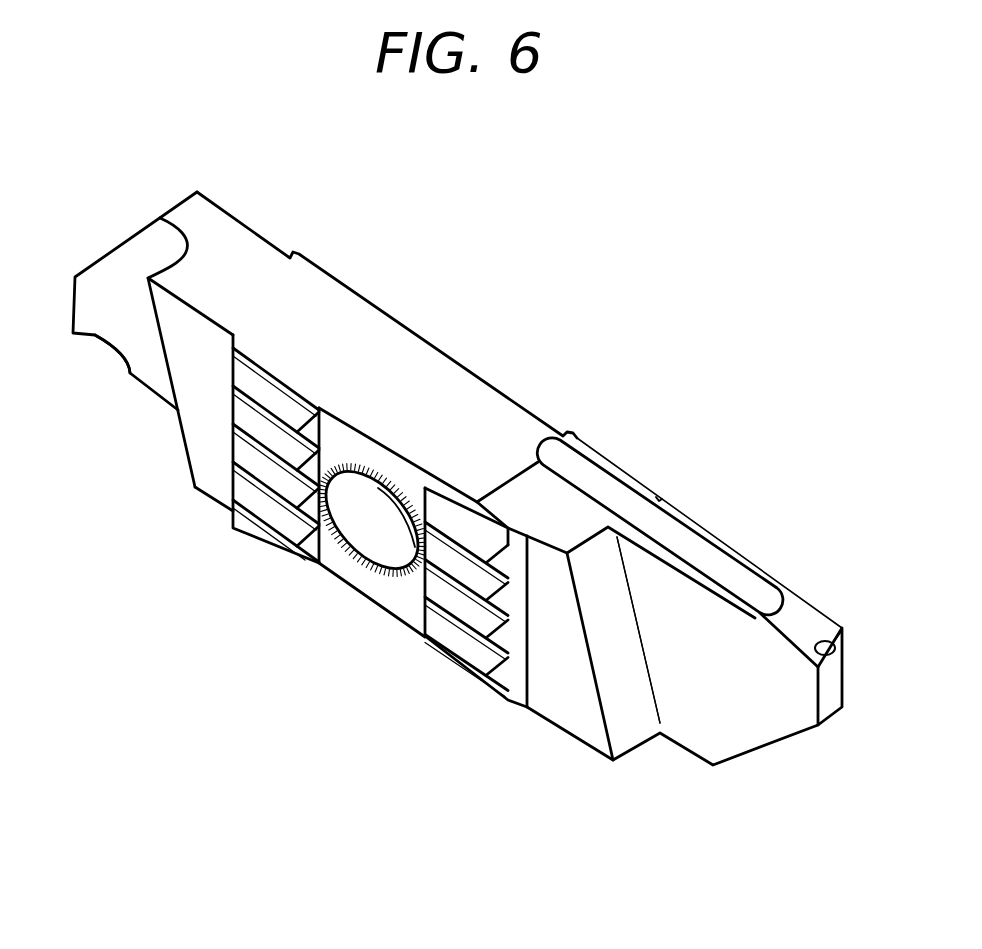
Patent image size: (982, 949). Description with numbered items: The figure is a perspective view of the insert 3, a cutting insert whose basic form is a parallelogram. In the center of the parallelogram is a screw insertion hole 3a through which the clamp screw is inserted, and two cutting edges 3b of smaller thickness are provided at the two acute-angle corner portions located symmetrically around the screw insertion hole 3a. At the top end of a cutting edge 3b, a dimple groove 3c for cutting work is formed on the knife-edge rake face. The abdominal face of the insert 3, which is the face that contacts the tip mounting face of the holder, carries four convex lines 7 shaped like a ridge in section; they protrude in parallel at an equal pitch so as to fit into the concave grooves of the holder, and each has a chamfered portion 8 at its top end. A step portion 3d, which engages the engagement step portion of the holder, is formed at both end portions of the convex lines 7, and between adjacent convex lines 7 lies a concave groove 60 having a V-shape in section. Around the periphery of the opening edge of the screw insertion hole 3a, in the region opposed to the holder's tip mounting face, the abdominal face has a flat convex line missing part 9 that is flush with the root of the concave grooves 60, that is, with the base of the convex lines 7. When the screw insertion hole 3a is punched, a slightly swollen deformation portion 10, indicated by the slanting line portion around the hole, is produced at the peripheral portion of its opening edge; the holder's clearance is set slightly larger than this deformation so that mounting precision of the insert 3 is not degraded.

The insert 3 is at (400, 307).
The screw insertion hole 3a is at (383, 562).
The cutting edge 3b is at (147, 370).
The dimple groove 3c is at (824, 645).
The step portion 3d is at (234, 341).
The convex line 7 is at (308, 548).
The chamfered portion 8 is at (253, 525).
The convex line missing part 9 is at (343, 580).
The swollen deformation portion 10 is at (360, 439).
The concave groove 60 is at (253, 492).